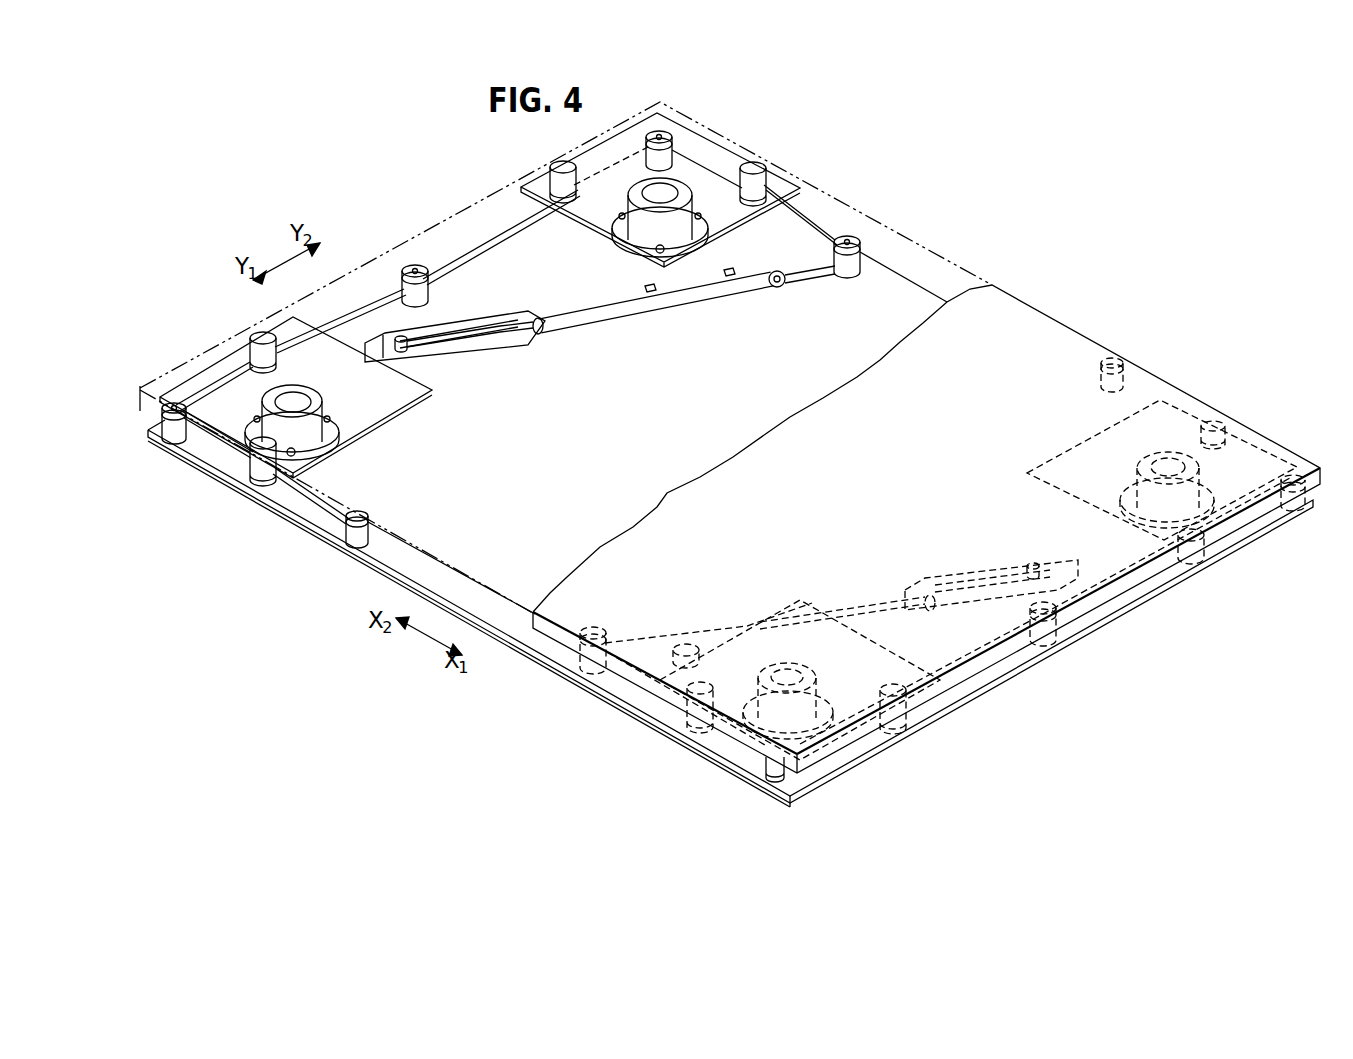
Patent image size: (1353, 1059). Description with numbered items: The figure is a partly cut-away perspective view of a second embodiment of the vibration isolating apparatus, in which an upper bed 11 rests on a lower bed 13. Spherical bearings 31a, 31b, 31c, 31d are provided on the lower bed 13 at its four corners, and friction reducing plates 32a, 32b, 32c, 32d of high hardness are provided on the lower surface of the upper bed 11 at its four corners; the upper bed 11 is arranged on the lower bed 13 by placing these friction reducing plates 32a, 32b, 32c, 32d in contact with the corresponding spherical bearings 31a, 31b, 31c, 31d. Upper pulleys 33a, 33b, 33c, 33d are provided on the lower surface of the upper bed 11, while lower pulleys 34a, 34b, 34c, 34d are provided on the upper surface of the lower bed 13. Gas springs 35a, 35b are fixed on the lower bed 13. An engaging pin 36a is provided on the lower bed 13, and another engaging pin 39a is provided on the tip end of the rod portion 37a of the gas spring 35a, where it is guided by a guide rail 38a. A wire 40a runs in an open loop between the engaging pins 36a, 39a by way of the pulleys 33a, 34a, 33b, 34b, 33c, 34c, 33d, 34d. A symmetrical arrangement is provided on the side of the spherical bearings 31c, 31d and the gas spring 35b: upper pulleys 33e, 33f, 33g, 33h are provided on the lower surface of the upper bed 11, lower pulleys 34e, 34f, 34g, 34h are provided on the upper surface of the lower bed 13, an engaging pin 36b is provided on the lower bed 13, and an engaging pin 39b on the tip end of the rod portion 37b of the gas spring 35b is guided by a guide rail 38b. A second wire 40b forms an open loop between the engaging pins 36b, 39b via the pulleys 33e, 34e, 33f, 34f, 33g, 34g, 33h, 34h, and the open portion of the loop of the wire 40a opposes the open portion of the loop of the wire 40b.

The upper bed 11 is at (1050, 322).
The lower bed 13 is at (376, 557).
The spherical bearing 31a is at (300, 398).
The spherical bearing 31b is at (656, 195).
The spherical bearing 31c is at (788, 672).
The spherical bearing 31d is at (1166, 465).
The friction reducing plate 32a is at (412, 405).
The friction reducing plate 32b is at (735, 218).
The friction reducing plate 32c is at (770, 622).
The friction reducing plate 32d is at (1085, 456).
The upper pulley 33a is at (258, 476).
The upper pulley 33b is at (255, 338).
The upper pulley 33c is at (560, 164).
The upper pulley 33d is at (762, 188).
The upper pulley 33e is at (1225, 428).
The upper pulley 33f is at (1210, 550).
The upper pulley 33g is at (912, 712).
The upper pulley 33h is at (690, 712).
The lower pulley 34a is at (174, 404).
The lower pulley 34b is at (410, 267).
The lower pulley 34c is at (657, 133).
The lower pulley 34d is at (852, 239).
The lower pulley 34e is at (1293, 508).
The lower pulley 34f is at (1050, 640).
The lower pulley 34g is at (764, 770).
The lower pulley 34h is at (590, 670).
The gas spring 35a is at (622, 316).
The gas spring 35b is at (860, 595).
The engaging pin 36a is at (385, 501).
The engaging pin 36b is at (1120, 361).
The rod portion 37a is at (548, 336).
The rod portion 37b is at (930, 612).
The guide rail 38a is at (480, 350).
The guide rail 38b is at (975, 572).
The engaging pin 39a is at (405, 338).
The engaging pin 39b is at (1033, 563).
The wire 40a is at (494, 238).
The wire 40b is at (665, 637).